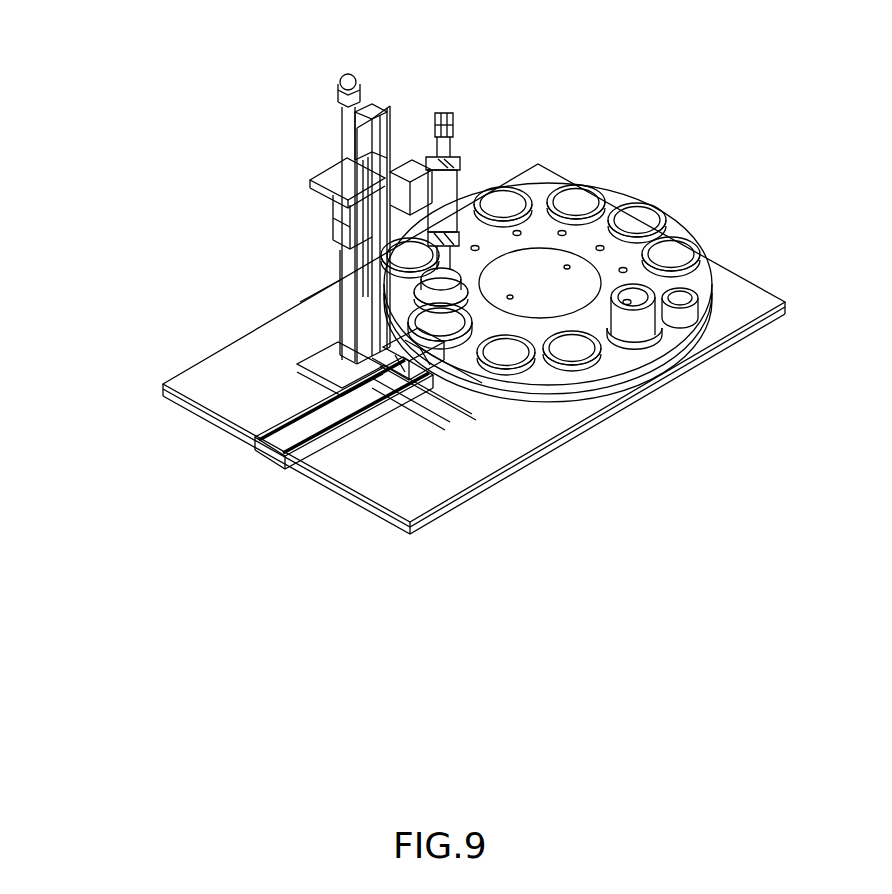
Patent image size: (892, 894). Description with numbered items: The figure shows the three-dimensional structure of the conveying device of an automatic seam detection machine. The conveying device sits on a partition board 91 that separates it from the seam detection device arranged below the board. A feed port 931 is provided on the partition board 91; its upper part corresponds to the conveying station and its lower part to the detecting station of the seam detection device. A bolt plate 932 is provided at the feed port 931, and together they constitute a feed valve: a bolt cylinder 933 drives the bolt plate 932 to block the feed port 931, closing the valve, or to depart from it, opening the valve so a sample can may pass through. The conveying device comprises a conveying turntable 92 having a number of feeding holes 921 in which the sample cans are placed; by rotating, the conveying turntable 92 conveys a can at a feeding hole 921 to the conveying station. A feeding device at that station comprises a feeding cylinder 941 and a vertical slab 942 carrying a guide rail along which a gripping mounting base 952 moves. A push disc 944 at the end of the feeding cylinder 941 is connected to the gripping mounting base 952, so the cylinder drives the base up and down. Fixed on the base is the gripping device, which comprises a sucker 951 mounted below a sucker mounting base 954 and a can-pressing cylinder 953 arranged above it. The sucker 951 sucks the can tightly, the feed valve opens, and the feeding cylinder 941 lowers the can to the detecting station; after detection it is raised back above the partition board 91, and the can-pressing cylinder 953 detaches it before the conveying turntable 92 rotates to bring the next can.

The partition board 91 is at (203, 369).
The conveying turntable 92 is at (540, 187).
The feeding hole 921 is at (686, 302).
The feed port 931 is at (448, 381).
The bolt plate 932 is at (431, 387).
The bolt cylinder 933 is at (275, 449).
The feeding cylinder 941 is at (340, 138).
The vertical slab 942 is at (385, 118).
The push disc 944 is at (330, 217).
The sucker 951 is at (458, 293).
The gripping mounting base 952 is at (412, 177).
The can-pressing cylinder 953 is at (449, 121).
The sucker mounting base 954 is at (456, 237).